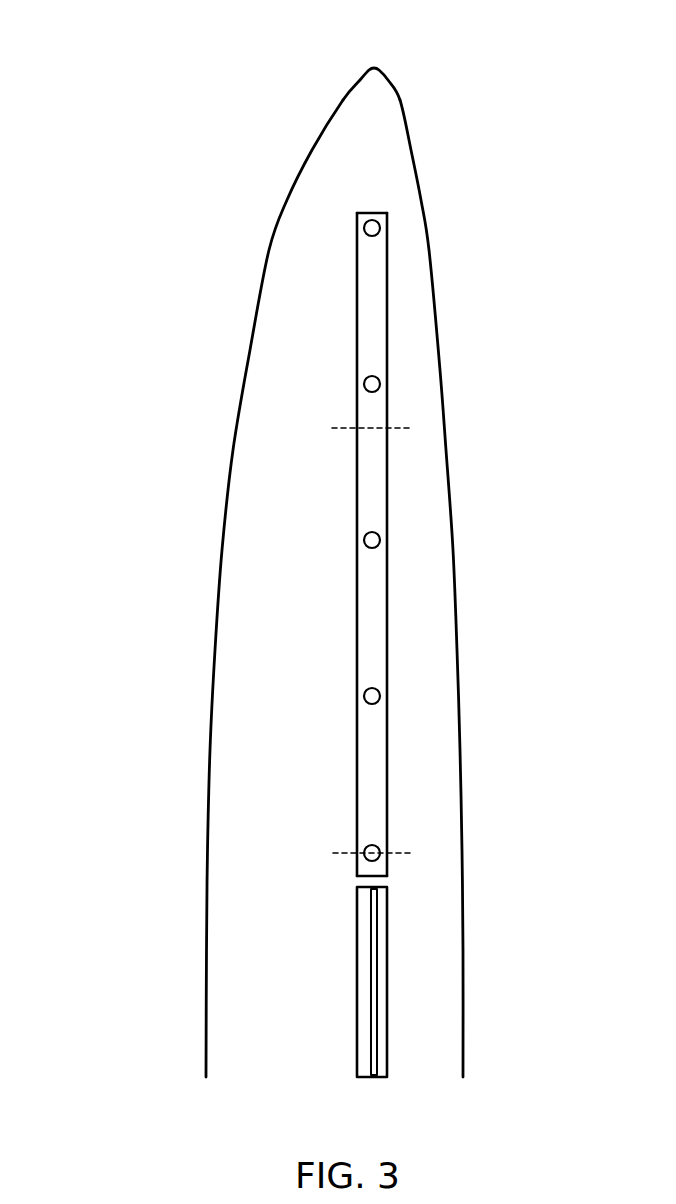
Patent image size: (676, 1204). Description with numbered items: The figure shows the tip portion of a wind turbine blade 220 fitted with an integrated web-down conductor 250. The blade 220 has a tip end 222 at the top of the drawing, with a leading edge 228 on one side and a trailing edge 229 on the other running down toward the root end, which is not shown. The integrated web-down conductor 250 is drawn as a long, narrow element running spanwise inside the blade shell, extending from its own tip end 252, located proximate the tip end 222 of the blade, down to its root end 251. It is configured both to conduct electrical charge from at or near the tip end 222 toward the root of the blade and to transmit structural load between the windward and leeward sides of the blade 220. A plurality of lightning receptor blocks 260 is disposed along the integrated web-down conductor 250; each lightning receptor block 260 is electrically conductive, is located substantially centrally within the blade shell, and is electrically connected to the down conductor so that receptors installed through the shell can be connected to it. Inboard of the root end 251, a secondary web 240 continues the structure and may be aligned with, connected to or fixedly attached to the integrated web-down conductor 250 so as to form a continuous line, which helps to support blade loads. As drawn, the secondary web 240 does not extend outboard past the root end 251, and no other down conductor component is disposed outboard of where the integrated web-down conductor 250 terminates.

The blade 220 is at (146, 183).
The tip end 222 is at (364, 68).
The leading edge 228 is at (455, 555).
The trailing edge 229 is at (212, 646).
The secondary web 240 is at (388, 989).
The integrated web-down conductor 250 is at (456, 520).
The root end 251 is at (375, 878).
The tip end 252 is at (372, 213).
The lightning receptor block 260 is at (381, 226).